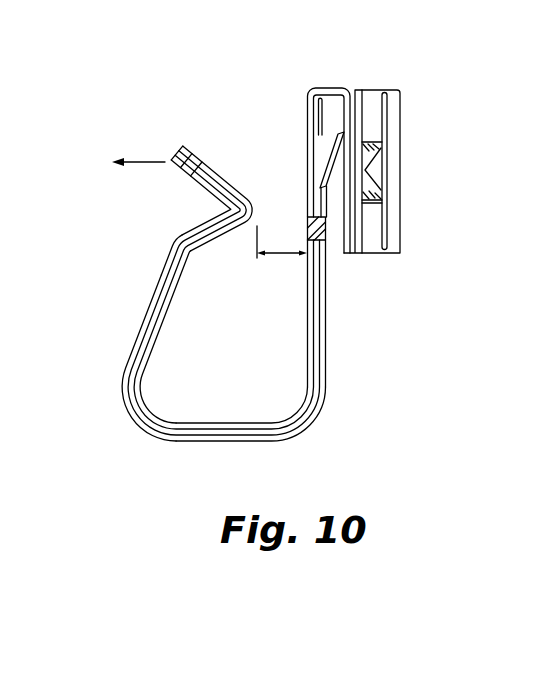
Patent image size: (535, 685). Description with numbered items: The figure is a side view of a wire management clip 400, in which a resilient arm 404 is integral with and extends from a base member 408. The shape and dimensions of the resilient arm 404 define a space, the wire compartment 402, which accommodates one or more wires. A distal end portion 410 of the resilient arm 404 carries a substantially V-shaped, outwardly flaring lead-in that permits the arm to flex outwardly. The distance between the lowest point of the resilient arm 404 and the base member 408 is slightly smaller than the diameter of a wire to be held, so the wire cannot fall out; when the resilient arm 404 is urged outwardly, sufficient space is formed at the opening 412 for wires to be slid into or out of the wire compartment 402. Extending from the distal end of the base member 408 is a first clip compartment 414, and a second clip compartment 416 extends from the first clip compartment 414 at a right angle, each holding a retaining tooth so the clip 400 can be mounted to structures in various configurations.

The wire management clip 400 is at (118, 112).
The wire compartment 402 is at (188, 377).
The resilient arm 404 is at (143, 326).
The base member 408 is at (326, 341).
The distal end portion 410 is at (179, 244).
The opening 412 is at (277, 186).
The first clip compartment 414 is at (337, 240).
The second clip compartment 416 is at (369, 98).